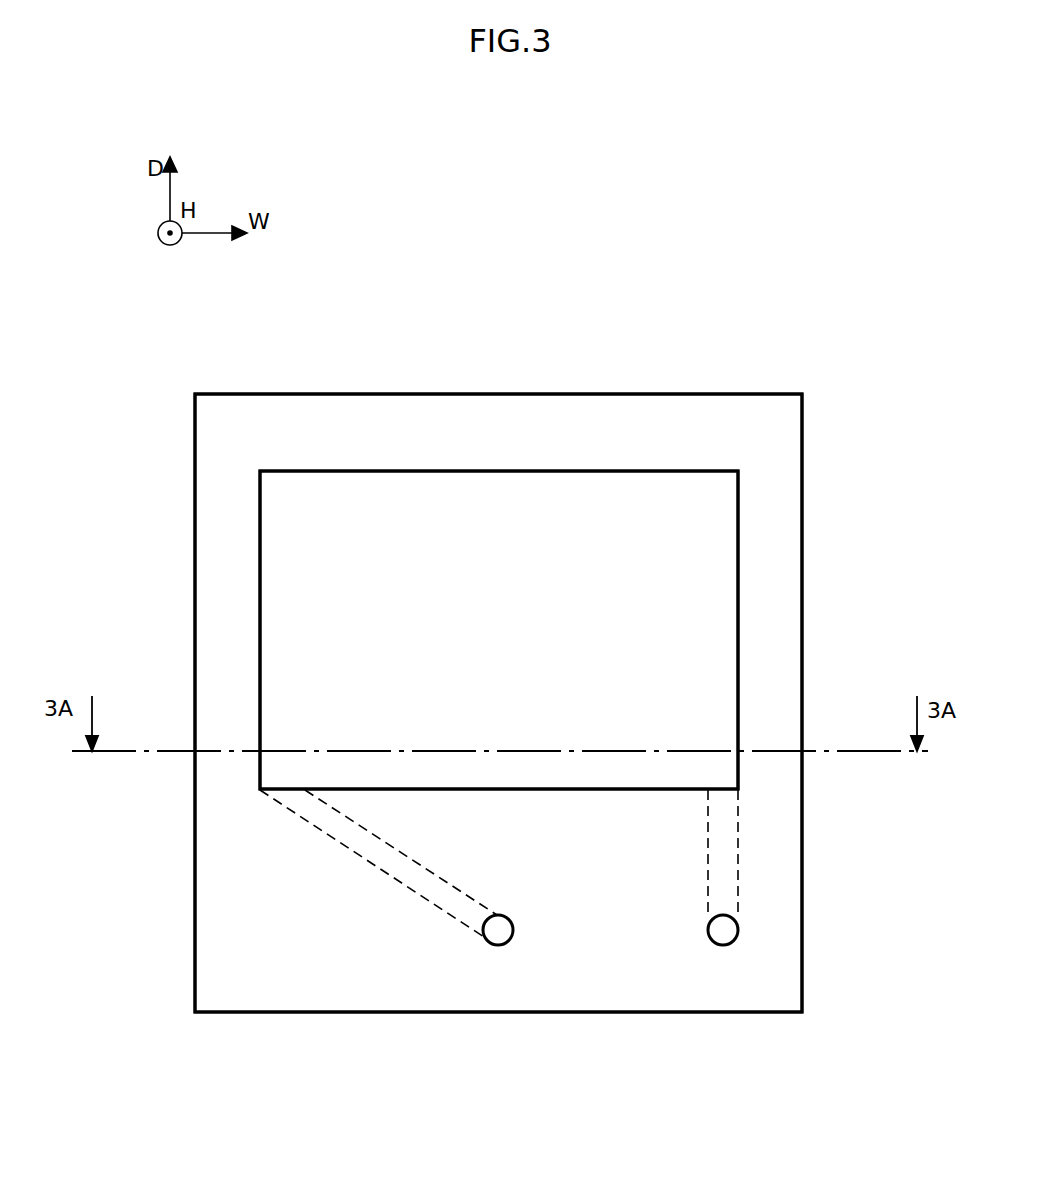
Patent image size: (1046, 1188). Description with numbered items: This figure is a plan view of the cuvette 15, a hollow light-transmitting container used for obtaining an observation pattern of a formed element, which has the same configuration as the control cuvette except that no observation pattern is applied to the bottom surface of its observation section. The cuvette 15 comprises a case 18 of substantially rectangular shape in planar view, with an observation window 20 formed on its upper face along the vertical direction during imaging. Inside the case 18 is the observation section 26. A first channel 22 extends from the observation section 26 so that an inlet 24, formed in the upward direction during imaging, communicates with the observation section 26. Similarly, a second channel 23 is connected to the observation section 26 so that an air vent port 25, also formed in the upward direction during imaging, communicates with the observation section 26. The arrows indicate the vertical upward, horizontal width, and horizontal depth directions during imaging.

The cuvette 15 is at (520, 393).
The case 18 is at (668, 393).
The observation window 20 is at (258, 556).
The first channel 22 is at (352, 848).
The second channel 23 is at (708, 830).
The inlet 24 is at (490, 940).
The air vent port 25 is at (714, 937).
The observation section 26 is at (340, 603).